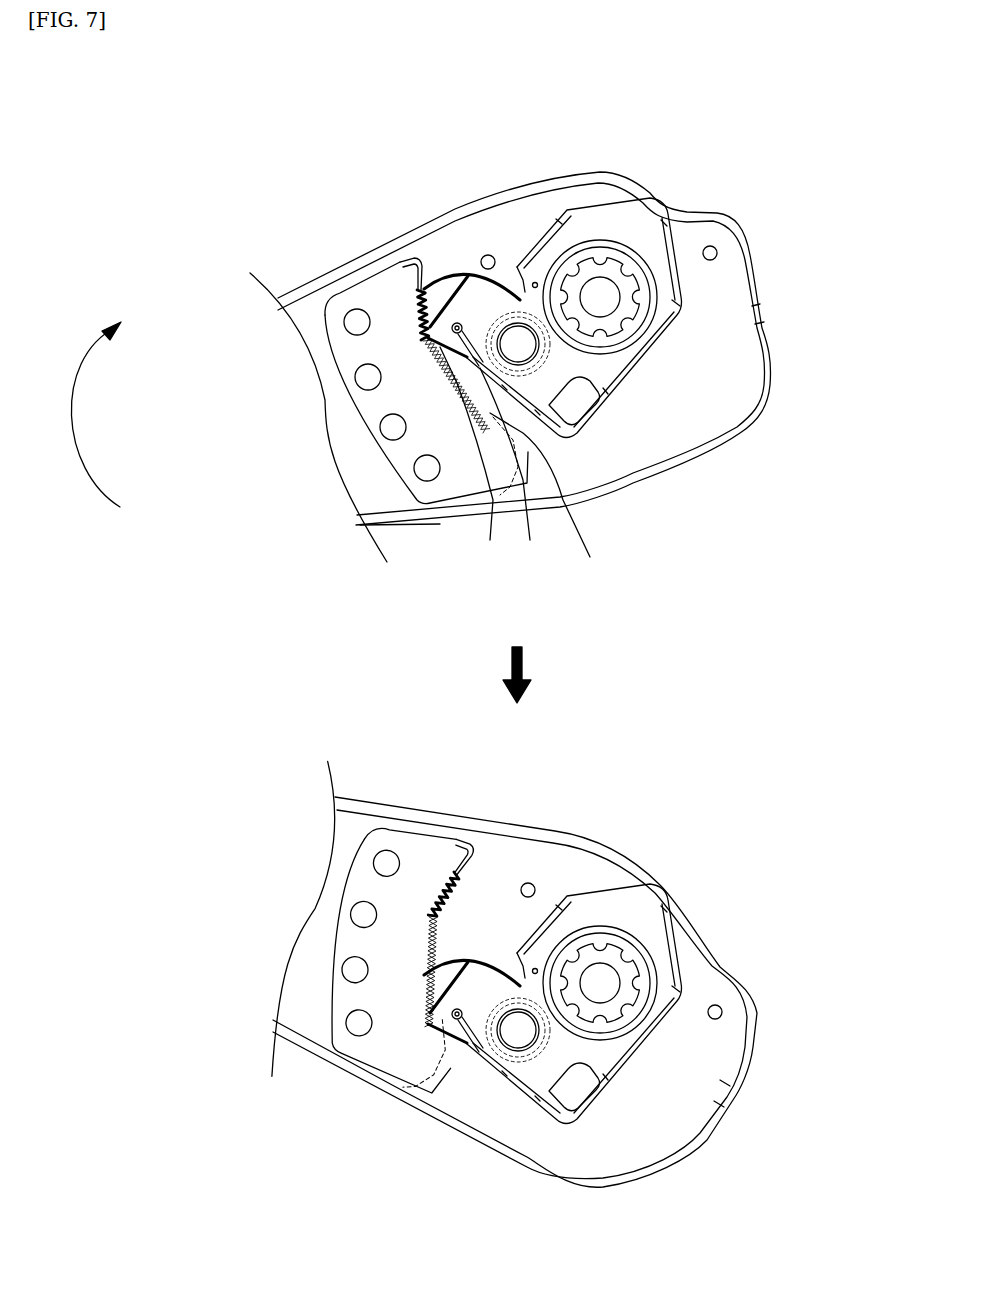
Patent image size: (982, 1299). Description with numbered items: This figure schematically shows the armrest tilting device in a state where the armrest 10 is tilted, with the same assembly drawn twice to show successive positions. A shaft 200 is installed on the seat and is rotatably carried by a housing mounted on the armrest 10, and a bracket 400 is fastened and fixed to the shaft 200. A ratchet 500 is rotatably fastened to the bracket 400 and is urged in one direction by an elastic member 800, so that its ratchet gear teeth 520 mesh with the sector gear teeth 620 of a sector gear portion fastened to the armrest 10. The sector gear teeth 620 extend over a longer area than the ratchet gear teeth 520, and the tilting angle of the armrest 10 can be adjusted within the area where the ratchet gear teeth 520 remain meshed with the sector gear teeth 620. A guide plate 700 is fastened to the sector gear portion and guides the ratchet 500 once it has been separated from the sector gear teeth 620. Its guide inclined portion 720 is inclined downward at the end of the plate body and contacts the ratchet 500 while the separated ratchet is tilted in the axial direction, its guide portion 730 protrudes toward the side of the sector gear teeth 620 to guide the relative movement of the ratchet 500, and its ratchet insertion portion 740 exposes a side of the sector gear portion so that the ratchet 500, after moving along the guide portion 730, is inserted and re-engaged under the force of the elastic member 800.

The armrest 10 is at (357, 487).
The shaft 200 is at (643, 280).
The bracket 400 is at (617, 217).
The ratchet 500 is at (485, 290).
The ratchet gear teeth 520 is at (426, 343).
The sector gear teeth 620 is at (417, 306).
The guide plate 700 is at (457, 500).
The guide inclined portion 720 is at (530, 540).
The guide portion 730 is at (590, 557).
The ratchet insertion portion 740 is at (418, 262).
The elastic member 800 is at (490, 540).